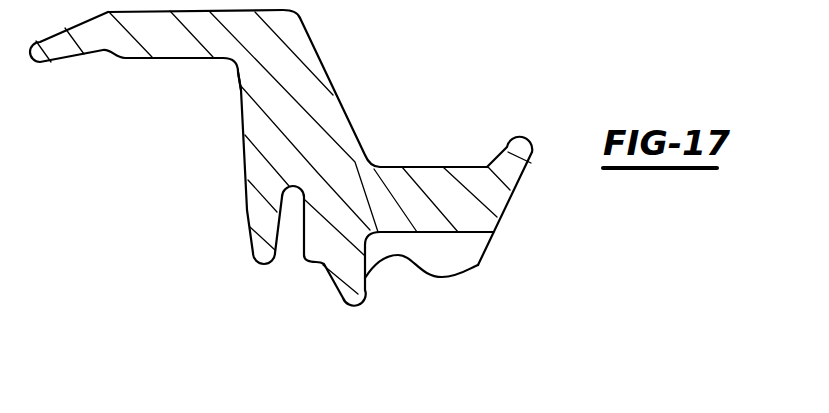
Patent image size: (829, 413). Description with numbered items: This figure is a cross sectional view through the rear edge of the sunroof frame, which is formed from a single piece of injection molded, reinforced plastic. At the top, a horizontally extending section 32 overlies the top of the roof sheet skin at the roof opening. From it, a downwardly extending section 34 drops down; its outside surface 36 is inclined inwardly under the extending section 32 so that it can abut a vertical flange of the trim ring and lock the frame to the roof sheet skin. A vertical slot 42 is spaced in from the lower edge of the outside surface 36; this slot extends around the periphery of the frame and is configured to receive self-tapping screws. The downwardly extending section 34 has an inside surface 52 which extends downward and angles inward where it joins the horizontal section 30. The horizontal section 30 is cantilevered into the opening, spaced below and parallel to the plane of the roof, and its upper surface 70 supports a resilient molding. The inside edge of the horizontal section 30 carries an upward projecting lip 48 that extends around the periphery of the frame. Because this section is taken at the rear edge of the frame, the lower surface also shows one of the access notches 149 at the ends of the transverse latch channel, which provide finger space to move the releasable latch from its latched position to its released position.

The horizontal section 30 is at (496, 206).
The horizontally extending section 32 is at (152, 47).
The downwardly extending section 34 is at (330, 123).
The surface 36 is at (206, 116).
The vertical slot 42 is at (290, 254).
The upward projecting lip 48 is at (523, 137).
The inside surface 52 is at (325, 68).
The upper surface 70 is at (432, 177).
The access notches 149 is at (462, 258).